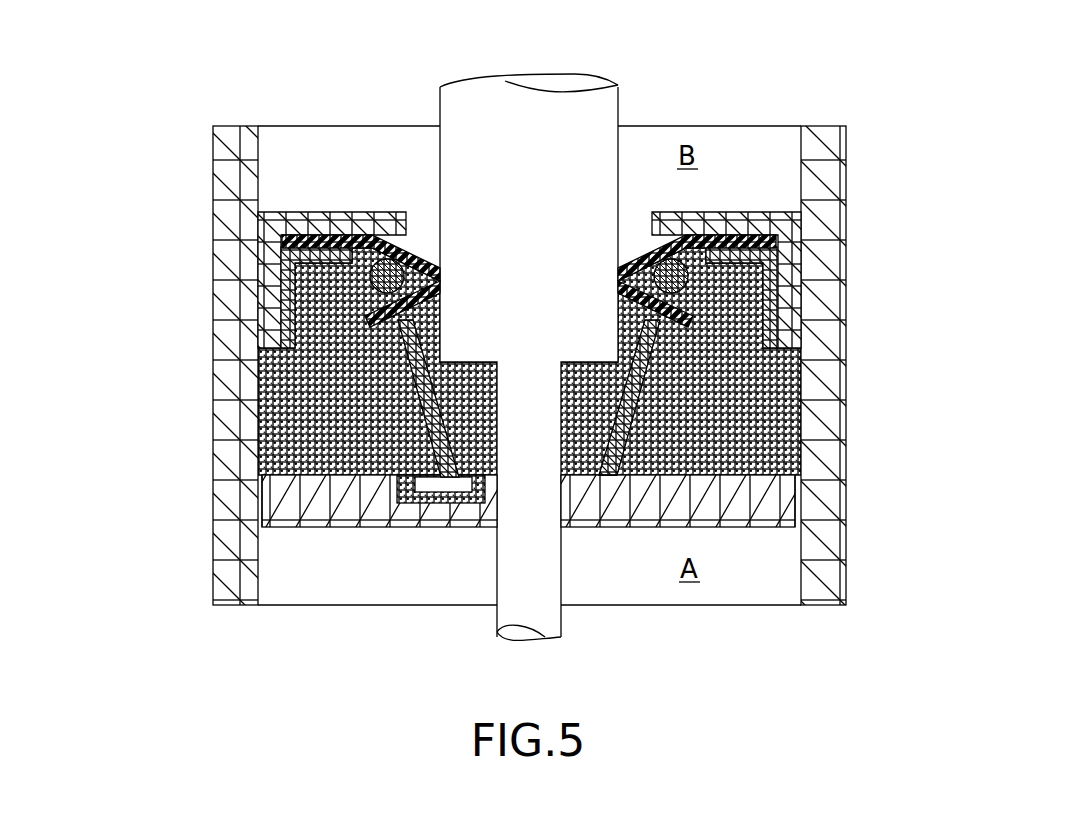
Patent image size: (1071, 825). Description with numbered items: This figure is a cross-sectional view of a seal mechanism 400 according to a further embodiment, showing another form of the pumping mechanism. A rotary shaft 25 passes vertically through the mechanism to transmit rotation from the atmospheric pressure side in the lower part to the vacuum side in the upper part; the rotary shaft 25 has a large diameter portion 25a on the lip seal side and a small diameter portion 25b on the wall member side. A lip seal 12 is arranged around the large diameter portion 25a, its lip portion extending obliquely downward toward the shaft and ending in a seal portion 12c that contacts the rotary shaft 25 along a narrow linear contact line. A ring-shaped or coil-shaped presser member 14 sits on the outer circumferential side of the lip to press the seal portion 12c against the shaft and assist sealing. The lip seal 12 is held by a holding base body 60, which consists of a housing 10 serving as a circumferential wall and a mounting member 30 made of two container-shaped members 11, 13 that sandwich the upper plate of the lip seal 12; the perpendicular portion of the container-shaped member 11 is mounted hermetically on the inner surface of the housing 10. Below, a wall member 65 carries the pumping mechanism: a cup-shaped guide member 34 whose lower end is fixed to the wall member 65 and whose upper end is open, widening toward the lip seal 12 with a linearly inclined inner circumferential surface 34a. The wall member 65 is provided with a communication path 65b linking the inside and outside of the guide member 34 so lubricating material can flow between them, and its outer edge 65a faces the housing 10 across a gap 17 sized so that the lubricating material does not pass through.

The seal mechanism 400 is at (355, 190).
The seal portion 12c is at (440, 277).
The large diameter portion 25a is at (608, 153).
The lip seal 12 is at (727, 232).
The container-shaped member 11 is at (262, 232).
The mounting member 30 is at (155, 207).
The container-shaped member 13 is at (290, 270).
The holding base body 60 is at (106, 230).
The housing 10 is at (235, 318).
The presser member 14 is at (672, 282).
The guide member 34 is at (645, 385).
The outer edge of bottom plate 65a is at (795, 495).
The gap 17 is at (262, 528).
The wall member 65 is at (360, 517).
The communication path 65b is at (421, 503).
The small diameter portion 25b is at (495, 567).
The inner circumferential surface 34a is at (602, 477).
The rotary shaft 25 is at (555, 573).